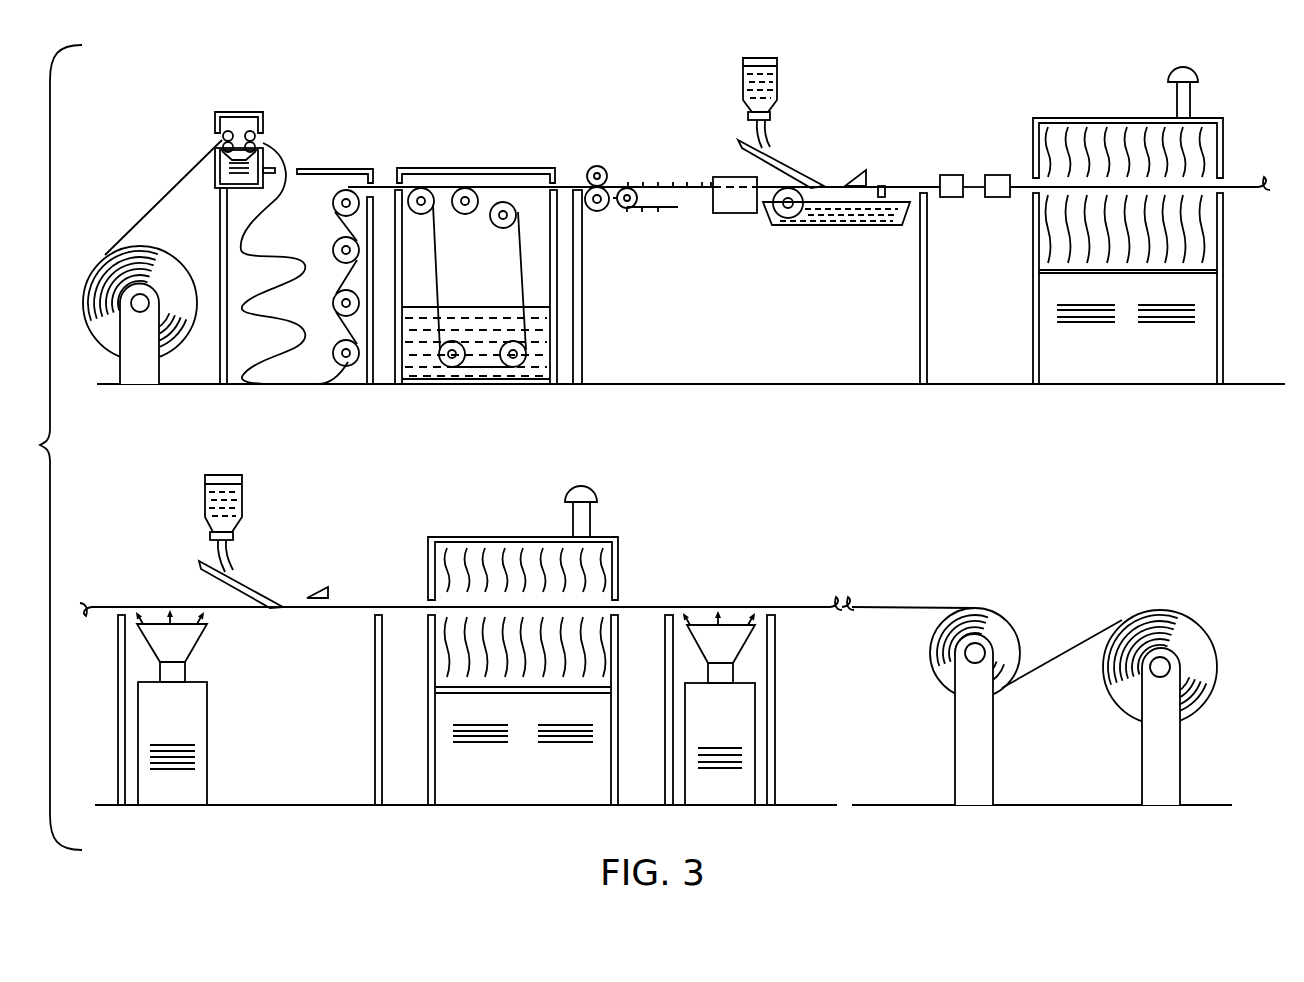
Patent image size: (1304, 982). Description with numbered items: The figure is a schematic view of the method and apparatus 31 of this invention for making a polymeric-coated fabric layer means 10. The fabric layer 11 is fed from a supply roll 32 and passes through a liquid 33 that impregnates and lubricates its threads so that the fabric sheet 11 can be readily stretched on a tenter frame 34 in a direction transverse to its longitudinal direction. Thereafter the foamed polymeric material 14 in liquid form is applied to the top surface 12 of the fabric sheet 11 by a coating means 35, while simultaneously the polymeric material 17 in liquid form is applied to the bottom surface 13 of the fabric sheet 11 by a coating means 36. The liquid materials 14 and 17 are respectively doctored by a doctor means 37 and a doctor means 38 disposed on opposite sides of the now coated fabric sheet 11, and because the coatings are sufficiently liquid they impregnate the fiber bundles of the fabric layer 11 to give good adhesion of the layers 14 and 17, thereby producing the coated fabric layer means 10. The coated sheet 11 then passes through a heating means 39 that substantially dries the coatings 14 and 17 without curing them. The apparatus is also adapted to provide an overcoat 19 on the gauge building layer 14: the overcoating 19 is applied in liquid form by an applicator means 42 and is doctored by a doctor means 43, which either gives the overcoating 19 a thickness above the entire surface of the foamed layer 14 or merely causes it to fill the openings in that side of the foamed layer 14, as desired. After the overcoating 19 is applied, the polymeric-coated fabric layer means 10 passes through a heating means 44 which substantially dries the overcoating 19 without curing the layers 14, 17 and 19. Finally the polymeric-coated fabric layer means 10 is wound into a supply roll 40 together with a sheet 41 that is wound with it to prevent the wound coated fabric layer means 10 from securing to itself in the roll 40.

The polymeric-coated fabric layer means 10 is at (1022, 177).
The fabric layer 11 is at (155, 205).
The top surface 12 is at (768, 183).
The bottom surface 13 is at (760, 190).
The foamed polymeric material 14 is at (790, 166).
The polymeric material 17 is at (885, 218).
The overcoat 19 is at (260, 588).
The method and apparatus 31 is at (910, 67).
The supply roll 32 is at (105, 260).
The liquid 33 is at (458, 317).
The tenter frame 34 is at (647, 209).
The coating means 35 is at (782, 137).
The coating means 36 is at (822, 241).
The doctor means 37 is at (857, 172).
The doctor means 38 is at (885, 192).
The heating means 39 is at (1114, 108).
The supply roll 40 is at (1008, 632).
The sheet 41 is at (1073, 648).
The applicator means 42 is at (260, 553).
The doctor means 43 is at (322, 587).
The heating means 44 is at (487, 530).